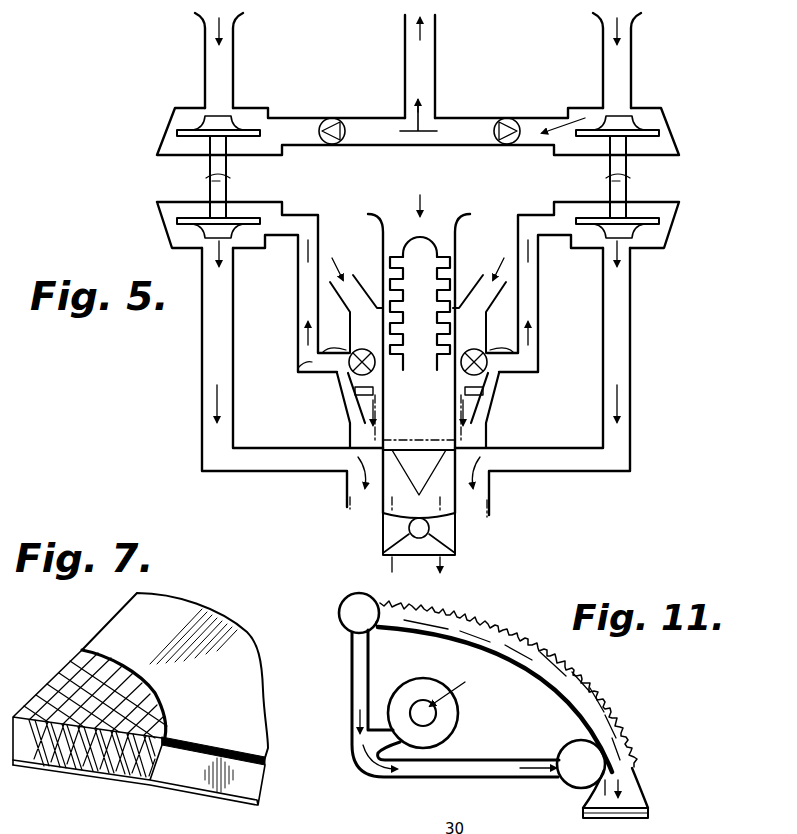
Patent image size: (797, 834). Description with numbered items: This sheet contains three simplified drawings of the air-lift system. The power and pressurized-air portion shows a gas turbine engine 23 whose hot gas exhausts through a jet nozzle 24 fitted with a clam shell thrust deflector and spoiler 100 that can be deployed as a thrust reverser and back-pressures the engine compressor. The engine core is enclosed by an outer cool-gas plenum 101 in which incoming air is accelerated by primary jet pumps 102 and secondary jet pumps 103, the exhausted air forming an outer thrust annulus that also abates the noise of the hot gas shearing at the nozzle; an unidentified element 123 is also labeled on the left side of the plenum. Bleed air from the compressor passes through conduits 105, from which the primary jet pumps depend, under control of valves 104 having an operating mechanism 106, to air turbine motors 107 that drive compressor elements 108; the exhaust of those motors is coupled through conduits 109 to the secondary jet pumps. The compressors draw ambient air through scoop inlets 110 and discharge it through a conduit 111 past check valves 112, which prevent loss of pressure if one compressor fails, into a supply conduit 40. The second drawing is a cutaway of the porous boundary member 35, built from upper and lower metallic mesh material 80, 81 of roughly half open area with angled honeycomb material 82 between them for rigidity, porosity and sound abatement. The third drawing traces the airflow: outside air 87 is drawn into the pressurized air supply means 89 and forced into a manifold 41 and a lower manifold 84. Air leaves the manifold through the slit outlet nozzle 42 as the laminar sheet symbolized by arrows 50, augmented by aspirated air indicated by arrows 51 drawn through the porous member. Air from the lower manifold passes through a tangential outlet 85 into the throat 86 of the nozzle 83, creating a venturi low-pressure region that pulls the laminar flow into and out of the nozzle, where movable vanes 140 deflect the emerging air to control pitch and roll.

In FIG. 5, the inlet 110 is at (205, 68).
In FIG. 5, the compressor elements 108 is at (175, 148).
In FIG. 5, the conduit 111 is at (296, 118).
In FIG. 5, the check valves 112 is at (350, 127).
In FIG. 5, the supply conduit 40 is at (436, 50).
In FIG. 5, the gas turbine engine 23 is at (462, 240).
In FIG. 5, the air turbine motors 107 is at (168, 235).
In FIG. 5, the conduits 109 is at (202, 372).
In FIG. 5, the left nozzle 123 is at (330, 298).
In FIG. 5, the outer cool-gas plenum 101 is at (502, 310).
In FIG. 5, the valves 104 is at (349, 362).
In FIG. 5, the conduits 105 is at (300, 382).
In FIG. 5, the operating mechanism 106 is at (355, 395).
In FIG. 5, the primary jet pumps 102 is at (492, 402).
In FIG. 5, the secondary jet pumps 103 is at (485, 486).
In FIG. 5, the thrust deflector and spoiler 100 is at (457, 535).
In FIG. 5, the jet nozzle 24 is at (385, 545).
In FIG. 7, the boundary member 35 is at (194, 589).
In FIG. 11, the boundary member 35 is at (447, 607).
In FIG. 7, the metallic mesh material 80 is at (143, 638).
In FIG. 7, the metallic mesh material 81 is at (180, 790).
In FIG. 7, the honeycomb material 82 is at (67, 750).
In FIG. 11, the manifold 41 is at (345, 600).
In FIG. 11, the outlet nozzle 42 is at (377, 603).
In FIG. 11, the laminar flow arrows 50 is at (390, 627).
In FIG. 11, the aspirated air arrows 51 is at (524, 628).
In FIG. 11, the outside air 87 is at (465, 682).
In FIG. 11, the pressurized air supply means 89 is at (446, 741).
In FIG. 11, the lower manifold 84 is at (571, 742).
In FIG. 11, the tangential outlet 85 is at (566, 779).
In FIG. 11, the throat 86 is at (630, 780).
In FIG. 11, the nozzle 83 is at (657, 803).
In FIG. 11, the vanes 140 is at (605, 813).